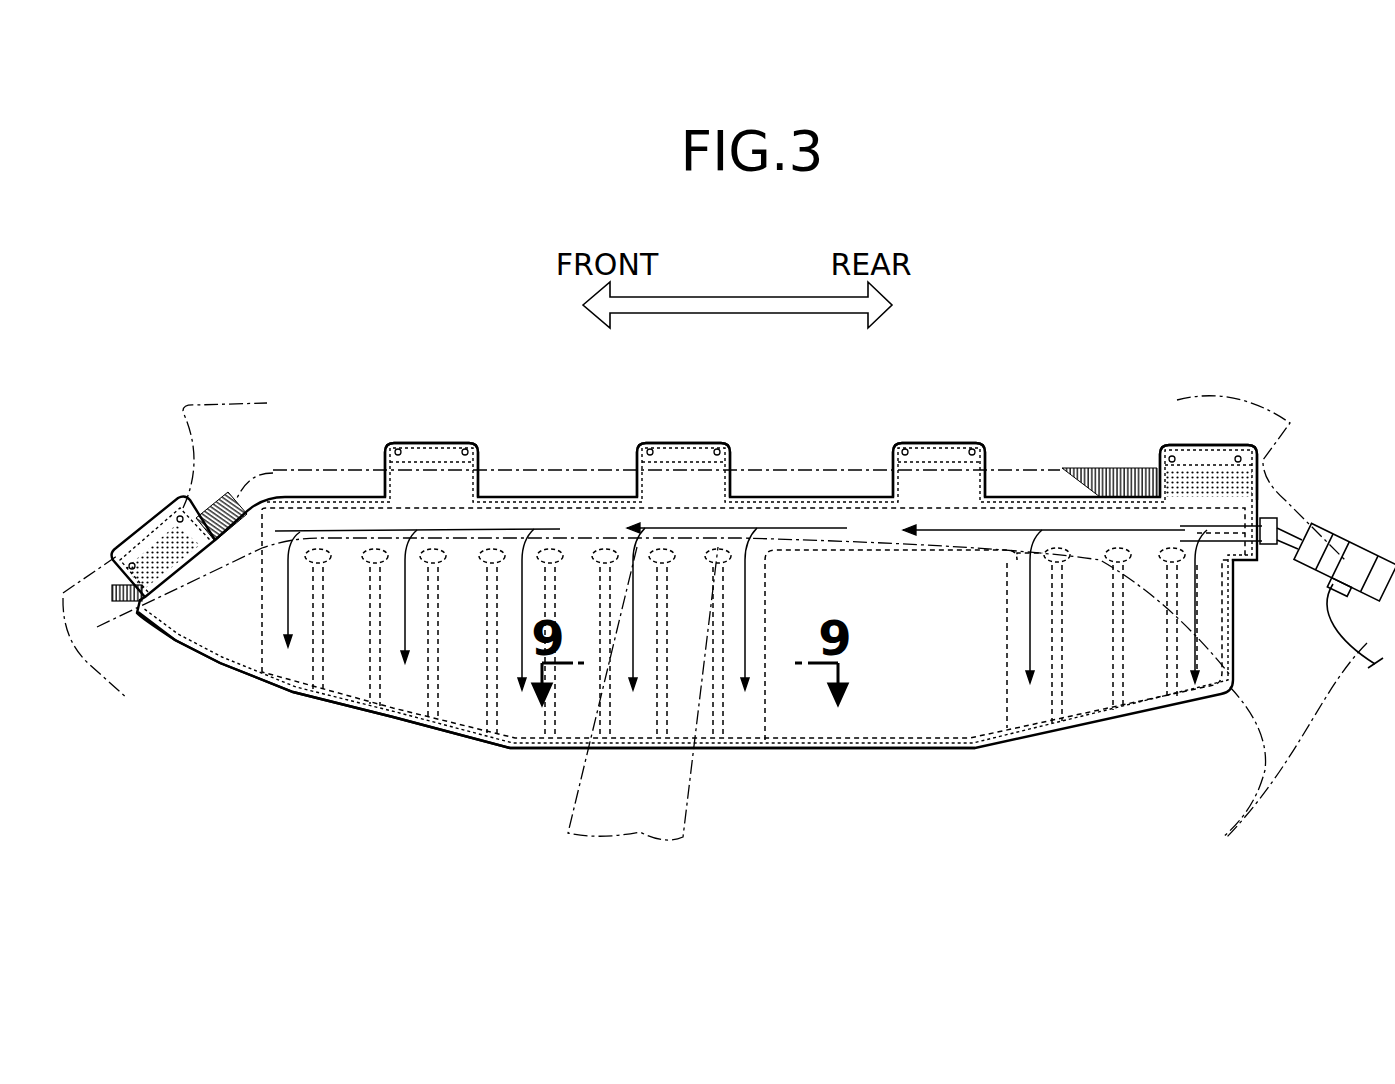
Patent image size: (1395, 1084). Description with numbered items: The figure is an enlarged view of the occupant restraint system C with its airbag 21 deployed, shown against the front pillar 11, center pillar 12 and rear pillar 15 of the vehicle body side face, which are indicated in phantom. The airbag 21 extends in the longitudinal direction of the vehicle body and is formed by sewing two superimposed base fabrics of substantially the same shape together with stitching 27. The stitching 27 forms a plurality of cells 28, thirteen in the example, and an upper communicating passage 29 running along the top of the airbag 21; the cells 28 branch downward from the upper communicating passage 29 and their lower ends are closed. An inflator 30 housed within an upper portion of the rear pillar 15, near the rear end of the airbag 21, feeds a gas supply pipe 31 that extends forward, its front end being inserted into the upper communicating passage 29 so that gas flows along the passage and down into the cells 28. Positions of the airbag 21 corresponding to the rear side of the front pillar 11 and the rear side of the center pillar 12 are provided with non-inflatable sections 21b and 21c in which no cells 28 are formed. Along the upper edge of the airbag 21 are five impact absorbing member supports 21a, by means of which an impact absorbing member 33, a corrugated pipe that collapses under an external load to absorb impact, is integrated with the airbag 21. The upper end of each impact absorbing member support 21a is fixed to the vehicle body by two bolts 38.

The front pillar 11 is at (97, 630).
The center pillar 12 is at (590, 802).
The rear pillar 15 is at (1257, 707).
The airbag 21 is at (850, 762).
The impact absorbing member support 21a is at (155, 537).
The non-inflatable section 21b is at (230, 653).
The non-inflatable section 21c is at (922, 725).
The stitching 27 is at (260, 587).
The cells 28 is at (390, 697).
The upper communicating passage 29 is at (548, 528).
The inflator 30 is at (1343, 555).
The gas supply pipe 31 is at (1277, 548).
The impact absorbing member 33 is at (1100, 475).
The bolts 38 is at (122, 556).
The occupant restraint system C is at (336, 447).